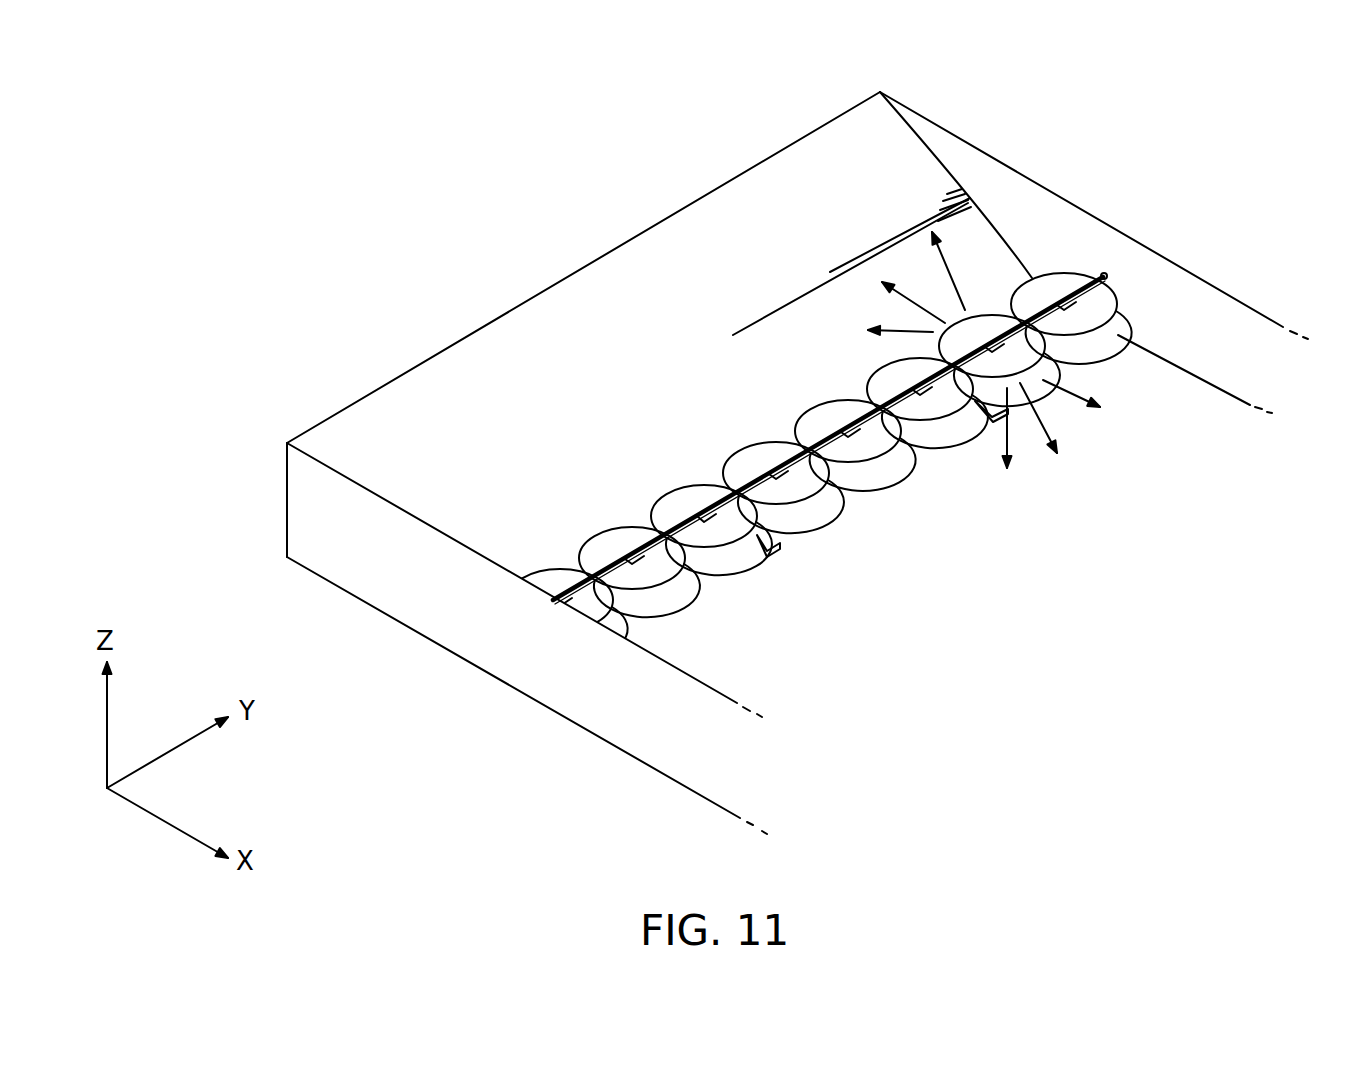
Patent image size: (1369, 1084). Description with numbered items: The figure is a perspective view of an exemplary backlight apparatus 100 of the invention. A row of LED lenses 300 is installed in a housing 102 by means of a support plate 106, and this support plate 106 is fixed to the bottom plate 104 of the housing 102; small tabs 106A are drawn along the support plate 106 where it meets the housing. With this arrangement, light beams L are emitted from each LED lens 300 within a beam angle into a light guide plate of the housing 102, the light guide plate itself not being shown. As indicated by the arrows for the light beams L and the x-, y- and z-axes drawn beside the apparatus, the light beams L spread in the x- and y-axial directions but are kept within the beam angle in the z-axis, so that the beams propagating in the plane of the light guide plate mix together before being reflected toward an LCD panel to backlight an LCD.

The backlight apparatus 100 is at (452, 208).
The housing 102 is at (1160, 228).
The bottom plate 104 is at (1170, 385).
The support plate 106 is at (707, 487).
The lens tab 106A is at (777, 551).
The LED lens 300 is at (1050, 257).
The light beams L is at (950, 280).